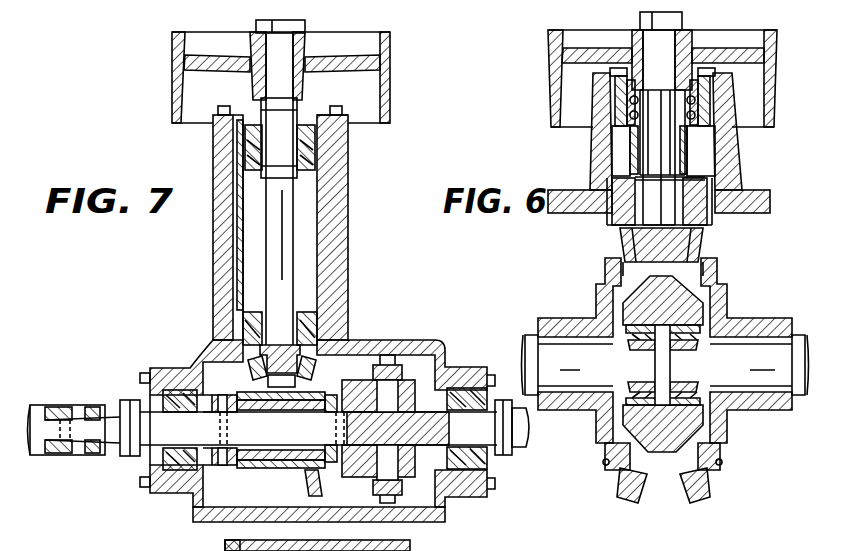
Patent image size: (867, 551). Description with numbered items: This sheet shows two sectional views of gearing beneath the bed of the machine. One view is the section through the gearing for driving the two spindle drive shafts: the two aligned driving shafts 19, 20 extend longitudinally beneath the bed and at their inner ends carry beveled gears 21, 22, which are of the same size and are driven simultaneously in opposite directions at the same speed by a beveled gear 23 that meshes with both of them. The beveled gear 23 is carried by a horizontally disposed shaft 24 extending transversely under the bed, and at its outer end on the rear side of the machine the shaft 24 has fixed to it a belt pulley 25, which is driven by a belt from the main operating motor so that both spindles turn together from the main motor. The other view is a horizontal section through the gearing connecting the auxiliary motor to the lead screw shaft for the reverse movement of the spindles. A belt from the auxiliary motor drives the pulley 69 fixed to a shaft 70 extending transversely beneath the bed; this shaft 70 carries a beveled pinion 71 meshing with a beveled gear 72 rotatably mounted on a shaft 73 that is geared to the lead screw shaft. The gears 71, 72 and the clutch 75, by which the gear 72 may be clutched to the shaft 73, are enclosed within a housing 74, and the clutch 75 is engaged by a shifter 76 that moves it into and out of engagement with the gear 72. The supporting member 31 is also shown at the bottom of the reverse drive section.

In FIG. 7, the pulley 69 is at (172, 90).
In FIG. 7, the shaft 70 is at (287, 239).
In FIG. 7, the beveled pinion 71 is at (256, 372).
In FIG. 7, the beveled gear 72 is at (308, 486).
In FIG. 7, the shaft 73 is at (210, 462).
In FIG. 7, the housing 74 is at (197, 508).
In FIG. 7, the clutch 75 is at (380, 488).
In FIG. 7, the shifter 76 is at (395, 487).
In FIG. 7, the supporting bracket 31 is at (432, 548).
In FIG. 6, the belt pulley 25 is at (550, 97).
In FIG. 6, the shaft 24 is at (664, 148).
In FIG. 6, the beveled gear 23 is at (647, 247).
In FIG. 6, the driving shaft 19 is at (531, 336).
In FIG. 6, the driving shaft 20 is at (797, 343).
In FIG. 6, the beveled gear 21 is at (627, 500).
In FIG. 6, the beveled gear 22 is at (697, 494).